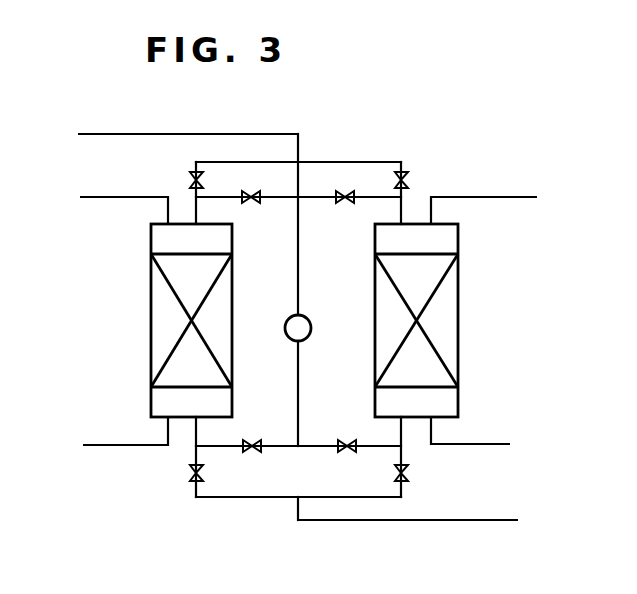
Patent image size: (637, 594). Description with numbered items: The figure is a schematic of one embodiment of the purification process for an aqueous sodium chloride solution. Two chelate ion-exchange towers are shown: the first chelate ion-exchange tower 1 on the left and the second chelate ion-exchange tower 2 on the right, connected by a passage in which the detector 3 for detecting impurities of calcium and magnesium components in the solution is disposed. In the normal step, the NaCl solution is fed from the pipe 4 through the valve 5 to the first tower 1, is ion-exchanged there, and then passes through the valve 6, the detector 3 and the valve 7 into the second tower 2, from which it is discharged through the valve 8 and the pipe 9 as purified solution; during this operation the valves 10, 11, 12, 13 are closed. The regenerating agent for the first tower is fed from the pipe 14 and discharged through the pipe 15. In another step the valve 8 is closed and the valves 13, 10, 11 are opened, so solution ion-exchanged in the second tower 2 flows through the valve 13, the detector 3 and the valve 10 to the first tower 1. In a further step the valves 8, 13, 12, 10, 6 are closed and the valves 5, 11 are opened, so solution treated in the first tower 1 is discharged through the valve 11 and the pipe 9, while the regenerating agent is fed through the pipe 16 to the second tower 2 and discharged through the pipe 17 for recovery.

The first chelate ion-exchange tower 1 is at (151, 325).
The second chelate ion-exchange tower 2 is at (459, 335).
The detector 3 is at (312, 330).
The pipe 4 is at (167, 134).
The valve 5 is at (191, 174).
The valve 6 is at (264, 453).
The valve 7 is at (353, 201).
The valve 8 is at (408, 482).
The pipe 9 is at (419, 516).
The valve 10 is at (243, 203).
The valve 11 is at (193, 485).
The valve 12 is at (414, 175).
The valve 13 is at (329, 453).
The pipe 14 is at (102, 204).
The pipe 15 is at (107, 439).
The pipe 16 is at (505, 206).
The pipe 17 is at (490, 439).